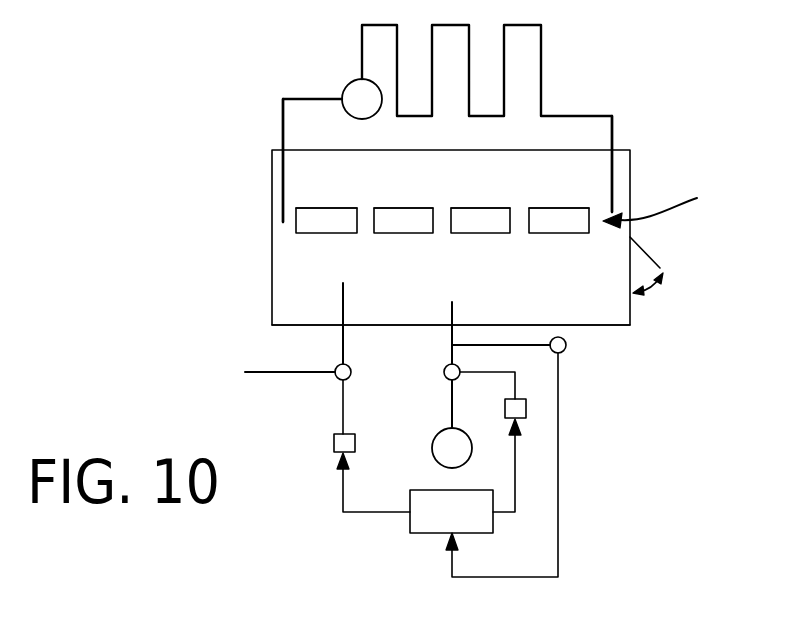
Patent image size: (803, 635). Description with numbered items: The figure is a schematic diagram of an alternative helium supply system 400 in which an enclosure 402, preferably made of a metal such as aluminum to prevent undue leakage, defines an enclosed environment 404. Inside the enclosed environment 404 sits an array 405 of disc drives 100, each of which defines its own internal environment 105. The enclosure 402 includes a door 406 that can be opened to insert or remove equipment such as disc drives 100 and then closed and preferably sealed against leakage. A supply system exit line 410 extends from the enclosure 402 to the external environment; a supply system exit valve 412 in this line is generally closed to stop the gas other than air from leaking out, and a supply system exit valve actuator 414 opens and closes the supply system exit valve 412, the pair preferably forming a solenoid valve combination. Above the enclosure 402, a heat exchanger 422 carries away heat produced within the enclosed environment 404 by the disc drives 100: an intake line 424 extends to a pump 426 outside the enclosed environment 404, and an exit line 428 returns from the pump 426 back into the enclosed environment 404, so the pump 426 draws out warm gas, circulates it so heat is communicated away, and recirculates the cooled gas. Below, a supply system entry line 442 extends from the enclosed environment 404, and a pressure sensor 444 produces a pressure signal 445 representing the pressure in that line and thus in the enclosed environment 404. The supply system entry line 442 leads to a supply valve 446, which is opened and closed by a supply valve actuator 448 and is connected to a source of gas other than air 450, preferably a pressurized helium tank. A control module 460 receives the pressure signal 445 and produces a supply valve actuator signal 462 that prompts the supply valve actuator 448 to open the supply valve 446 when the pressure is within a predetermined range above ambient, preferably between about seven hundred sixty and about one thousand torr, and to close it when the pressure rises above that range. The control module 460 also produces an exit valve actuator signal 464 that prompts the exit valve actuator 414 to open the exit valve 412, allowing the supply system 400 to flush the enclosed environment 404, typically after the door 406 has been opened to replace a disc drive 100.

The disc drives 100 is at (338, 233).
The internal environment 105 is at (325, 220).
The helium supply system 400 is at (116, 222).
The enclosure 402 is at (272, 313).
The enclosed environment 404 is at (303, 283).
The array 405 is at (678, 201).
The door 406 is at (658, 261).
The supply system exit line 410 is at (343, 355).
The supply system exit valve 412 is at (337, 380).
The supply system exit valve actuator 414 is at (337, 453).
The heat exchanger 422 is at (278, 27).
The intake line 424 is at (283, 127).
The pump 426 is at (342, 88).
The exit line 428 is at (613, 125).
The supply system entry line 442 is at (452, 355).
The pressure sensor 444 is at (568, 345).
The pressure signal 445 is at (560, 431).
The supply valve 446 is at (446, 380).
The supply valve actuator 448 is at (528, 408).
The source of gas other than air 450 is at (437, 463).
The control module 460 is at (422, 534).
The supply valve actuator signal 462 is at (506, 512).
The exit valve actuator signal 464 is at (373, 512).